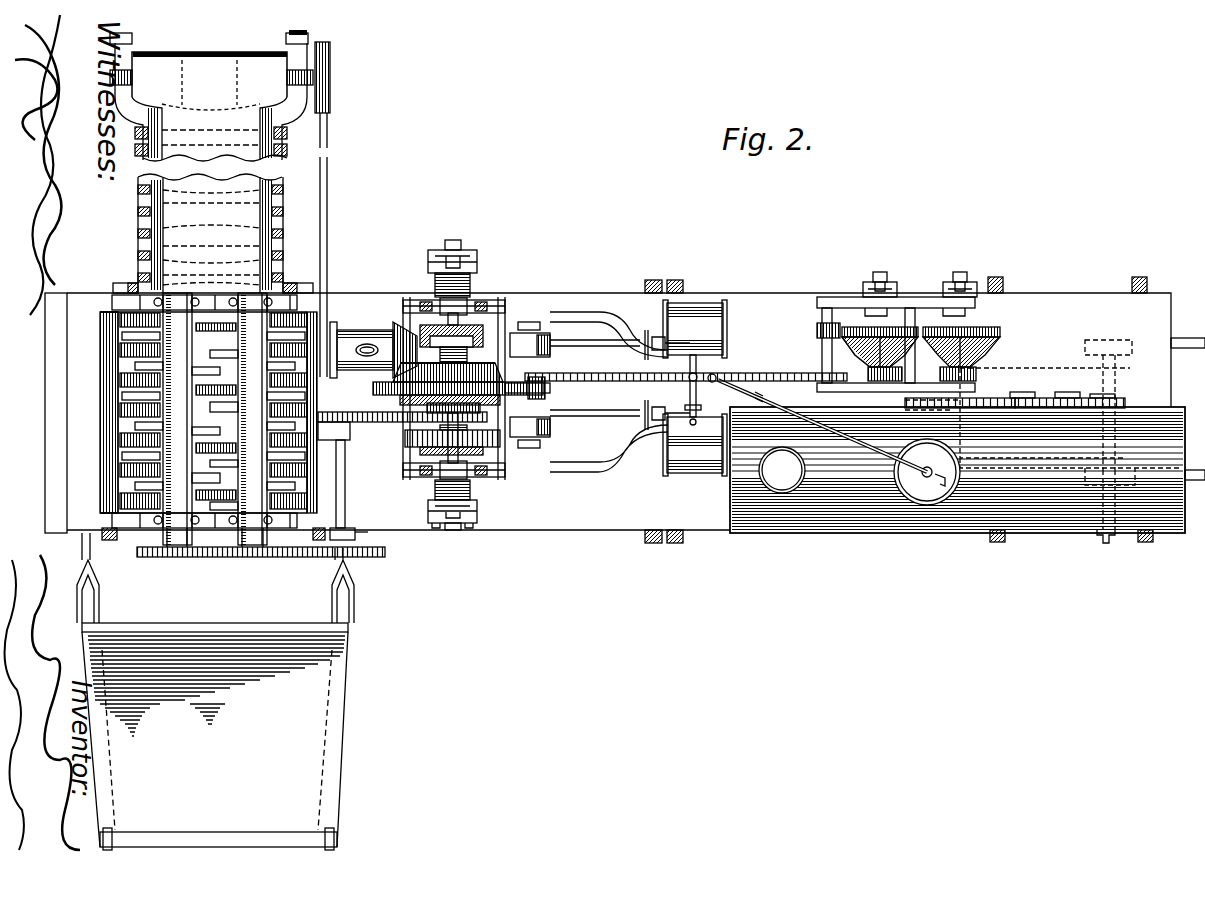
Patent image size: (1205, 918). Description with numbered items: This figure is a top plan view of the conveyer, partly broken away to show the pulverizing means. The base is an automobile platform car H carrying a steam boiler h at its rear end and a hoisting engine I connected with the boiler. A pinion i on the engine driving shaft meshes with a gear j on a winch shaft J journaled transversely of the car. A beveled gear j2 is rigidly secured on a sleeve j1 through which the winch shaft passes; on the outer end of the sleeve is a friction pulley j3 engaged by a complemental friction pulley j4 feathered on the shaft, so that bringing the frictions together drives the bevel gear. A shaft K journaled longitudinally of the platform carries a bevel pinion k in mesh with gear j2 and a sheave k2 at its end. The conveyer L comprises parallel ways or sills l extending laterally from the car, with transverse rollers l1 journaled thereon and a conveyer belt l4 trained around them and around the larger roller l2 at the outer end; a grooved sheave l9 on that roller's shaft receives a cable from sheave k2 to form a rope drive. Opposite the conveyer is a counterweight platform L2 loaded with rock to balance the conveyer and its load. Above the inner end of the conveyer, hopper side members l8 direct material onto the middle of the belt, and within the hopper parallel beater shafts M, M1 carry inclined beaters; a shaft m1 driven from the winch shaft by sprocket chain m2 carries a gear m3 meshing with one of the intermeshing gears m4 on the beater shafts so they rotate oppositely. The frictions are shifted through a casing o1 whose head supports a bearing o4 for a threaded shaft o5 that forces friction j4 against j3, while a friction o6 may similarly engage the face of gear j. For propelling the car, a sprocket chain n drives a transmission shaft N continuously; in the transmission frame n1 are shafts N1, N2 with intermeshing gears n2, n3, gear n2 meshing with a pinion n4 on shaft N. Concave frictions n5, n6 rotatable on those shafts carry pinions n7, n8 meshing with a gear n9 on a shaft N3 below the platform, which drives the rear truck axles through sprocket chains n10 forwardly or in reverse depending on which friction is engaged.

The automobile platform car H is at (1113, 295).
The steam boiler h is at (833, 520).
The hoisting engine I is at (682, 348).
The pinion i is at (550, 390).
The winch shaft J is at (455, 362).
The gear j is at (373, 388).
The sleeve j1 is at (478, 358).
The beveled gear j2 is at (485, 385).
The friction pulley j3 is at (430, 343).
The complemental friction pulley j4 is at (422, 342).
The shaft K is at (367, 364).
The bevel pinion k is at (340, 320).
The sheave k2 is at (335, 336).
The conveyer L is at (68, 394).
The counterweight platform L2 is at (347, 738).
The ways or sills l is at (277, 149).
The transverse rollers l1 is at (283, 190).
The roller l2 is at (312, 42).
The conveyer belt l4 is at (227, 257).
The hopper side members l8 is at (112, 452).
The grooved sheave l9 is at (330, 63).
The beater shaft M is at (300, 300).
The beater shaft M1 is at (120, 300).
The mixer shafts with paddles m is at (287, 320).
The shaft m1 is at (347, 492).
The sprocket chain m2 is at (383, 416).
The gear m3 is at (368, 562).
The intermeshing gears m4 is at (261, 561).
The transmission shaft N is at (827, 357).
The gear shaft N1 is at (893, 320).
The gear shaft N2 is at (968, 312).
The shaft N3 is at (930, 307).
The sprocket chain n is at (765, 373).
The transmission frame n1 is at (917, 303).
The gear n2 is at (903, 318).
The gear n3 is at (1000, 353).
The pinion n4 is at (823, 338).
The concave friction n5 is at (870, 374).
The concave friction n6 is at (997, 367).
The pinion n7 is at (877, 383).
The pinion n8 is at (972, 383).
The gear n9 is at (1003, 395).
The sprocket chains n10 is at (1120, 401).
The casing o1 is at (470, 303).
The bearing o4 is at (465, 262).
The threaded shaft o5 is at (455, 250).
The friction o6 is at (490, 437).